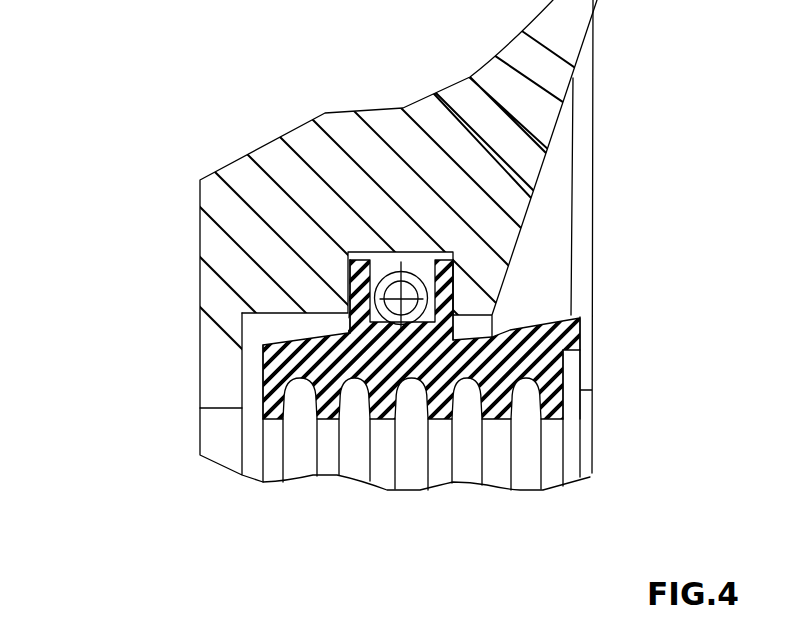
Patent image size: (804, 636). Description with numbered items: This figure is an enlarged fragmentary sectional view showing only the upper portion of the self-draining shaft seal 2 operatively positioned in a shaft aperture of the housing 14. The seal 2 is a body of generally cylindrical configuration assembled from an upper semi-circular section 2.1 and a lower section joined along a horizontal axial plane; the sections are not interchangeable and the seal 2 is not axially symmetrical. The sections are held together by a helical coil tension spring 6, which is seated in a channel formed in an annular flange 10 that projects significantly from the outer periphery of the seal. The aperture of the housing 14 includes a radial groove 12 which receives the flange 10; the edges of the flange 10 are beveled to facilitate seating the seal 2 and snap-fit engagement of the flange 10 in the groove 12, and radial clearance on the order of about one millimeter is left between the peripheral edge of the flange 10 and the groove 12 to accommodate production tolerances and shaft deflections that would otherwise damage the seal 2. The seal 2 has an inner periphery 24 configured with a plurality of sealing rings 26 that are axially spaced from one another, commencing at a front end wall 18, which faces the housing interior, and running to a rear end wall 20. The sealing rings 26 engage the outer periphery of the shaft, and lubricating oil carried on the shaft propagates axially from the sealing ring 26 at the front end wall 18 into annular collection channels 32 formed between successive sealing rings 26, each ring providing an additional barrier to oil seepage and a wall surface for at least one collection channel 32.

The housing 14 is at (275, 164).
The helical coil tension spring 6 is at (411, 272).
The radial groove 12 is at (380, 260).
The annular flange 10 is at (347, 280).
The rear end wall 20 is at (255, 368).
The upper semi-circular section 2.1 is at (275, 403).
The self-draining shaft seal 2 is at (272, 445).
The sealing rings 26 is at (272, 467).
The annular collection channels 32 is at (296, 474).
The front end wall 18 is at (570, 406).
The inner periphery 24 is at (601, 445).